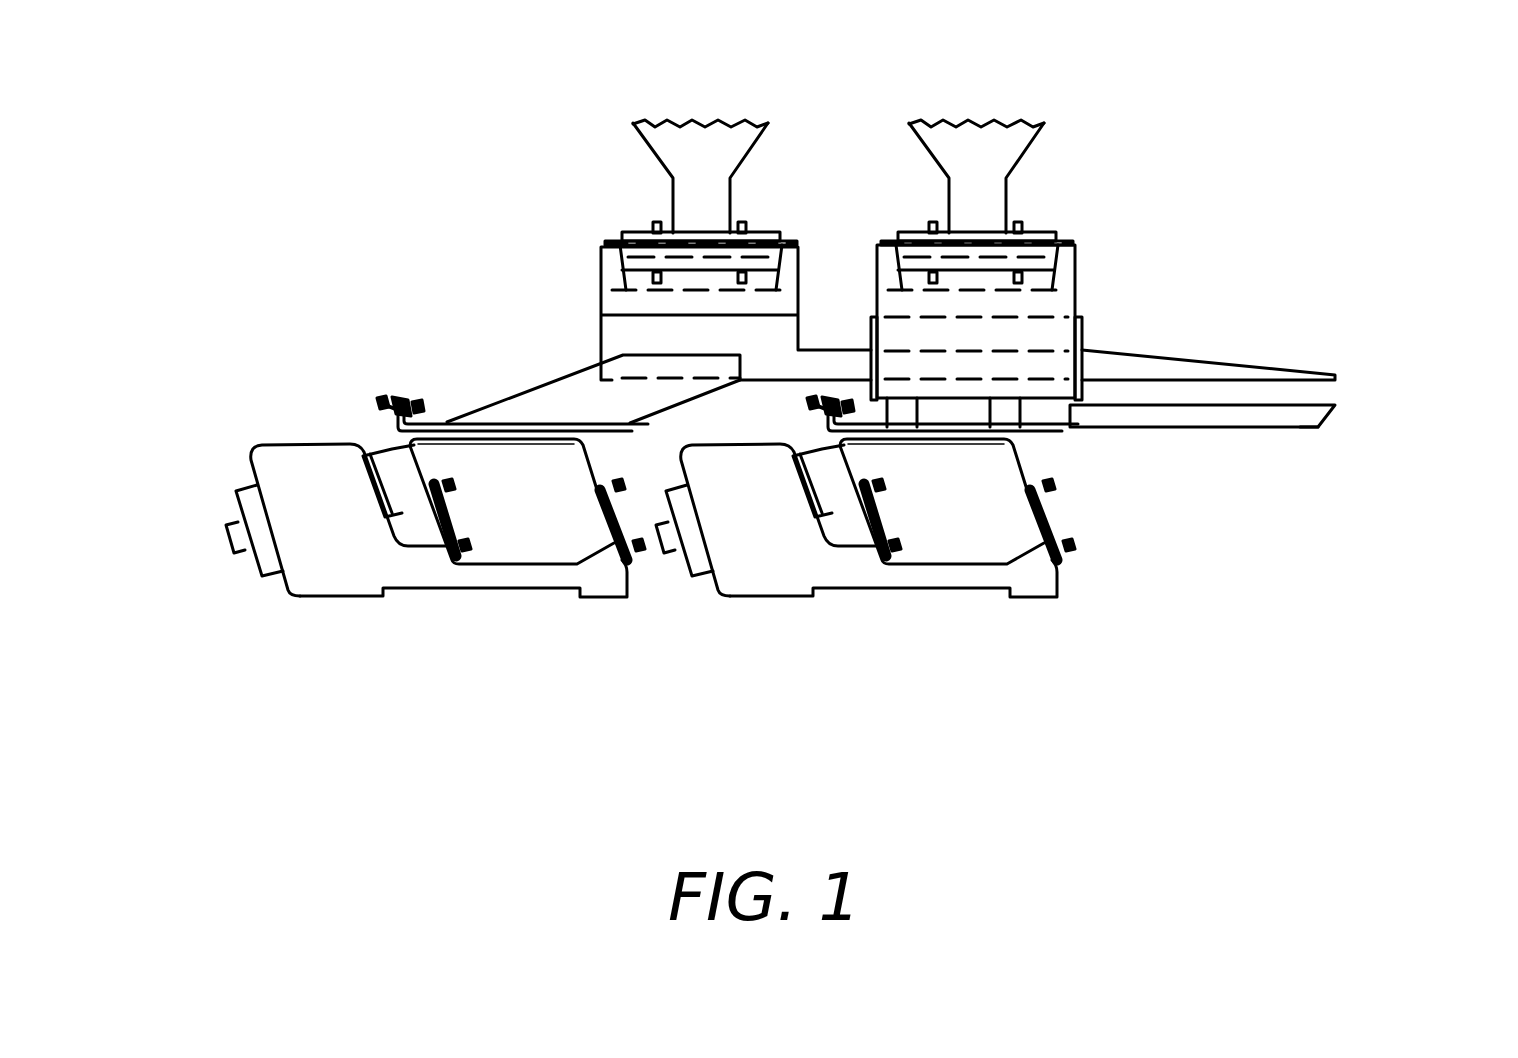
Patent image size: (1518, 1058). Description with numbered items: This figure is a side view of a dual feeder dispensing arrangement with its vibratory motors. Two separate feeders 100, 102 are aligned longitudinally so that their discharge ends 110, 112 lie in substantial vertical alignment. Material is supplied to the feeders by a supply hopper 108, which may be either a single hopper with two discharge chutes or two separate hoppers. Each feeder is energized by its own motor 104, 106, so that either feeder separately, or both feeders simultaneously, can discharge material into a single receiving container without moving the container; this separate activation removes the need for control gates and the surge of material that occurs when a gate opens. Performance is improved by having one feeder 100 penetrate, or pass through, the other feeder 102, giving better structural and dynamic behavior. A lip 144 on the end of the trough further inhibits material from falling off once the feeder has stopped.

The feeder 100 is at (601, 297).
The feeder 102 is at (1082, 292).
The motor 104 is at (315, 598).
The motor 106 is at (748, 598).
The supply hopper 108 is at (633, 123).
The discharge end 110 is at (1335, 372).
The discharge end 112 is at (1335, 412).
The lip 144 is at (1325, 425).